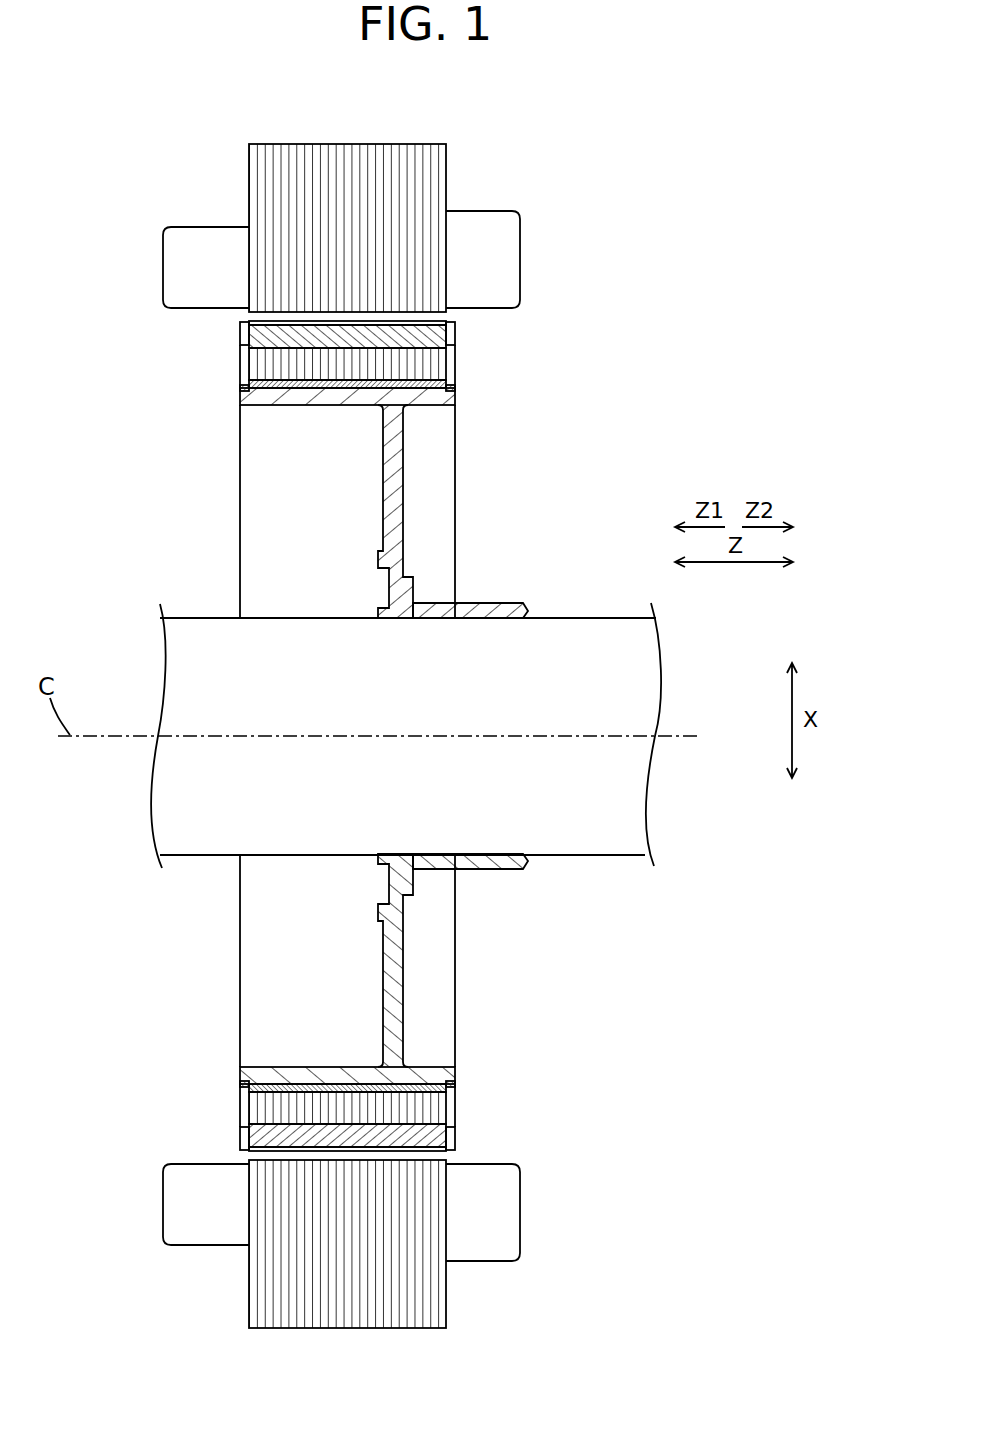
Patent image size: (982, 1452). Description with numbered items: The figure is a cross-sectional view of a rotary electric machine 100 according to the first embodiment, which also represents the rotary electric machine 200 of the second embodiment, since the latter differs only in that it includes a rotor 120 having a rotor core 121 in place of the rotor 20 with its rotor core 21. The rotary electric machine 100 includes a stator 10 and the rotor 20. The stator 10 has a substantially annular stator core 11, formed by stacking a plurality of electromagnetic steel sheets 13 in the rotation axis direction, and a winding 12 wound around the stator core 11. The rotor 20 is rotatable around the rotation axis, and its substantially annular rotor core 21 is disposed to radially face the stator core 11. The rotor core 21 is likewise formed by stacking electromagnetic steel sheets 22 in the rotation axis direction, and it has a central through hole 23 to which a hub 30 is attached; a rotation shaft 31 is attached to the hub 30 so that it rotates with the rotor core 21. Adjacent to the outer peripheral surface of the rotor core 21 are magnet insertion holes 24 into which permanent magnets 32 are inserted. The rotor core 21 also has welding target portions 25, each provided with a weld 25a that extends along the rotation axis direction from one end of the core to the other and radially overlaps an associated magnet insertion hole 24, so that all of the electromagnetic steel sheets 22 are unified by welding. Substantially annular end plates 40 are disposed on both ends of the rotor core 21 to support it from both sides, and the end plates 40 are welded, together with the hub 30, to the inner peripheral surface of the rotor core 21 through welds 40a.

The rotary electric machine 100 is at (482, 694).
The rotary electric machine 200 is at (482, 694).
The stator 10 is at (402, 694).
The stator core 11 is at (452, 181).
The winding 12 is at (521, 270).
The electromagnetic steel sheets 13 is at (410, 152).
The rotor 20 is at (433, 732).
The rotor 120 is at (433, 732).
The rotor core 21 is at (436, 736).
The rotor core 121 is at (448, 362).
The electromagnetic steel sheets 22 is at (448, 380).
The through hole 23 is at (283, 393).
The magnet insertion holes 24 is at (239, 348).
The welding target portions 25 is at (347, 735).
The weld 25a is at (322, 392).
The hub 30 is at (404, 435).
The rotation shaft 31 is at (545, 617).
The permanent magnets 32 is at (448, 343).
The end plates 40 is at (240, 330).
The welds 40a is at (240, 388).